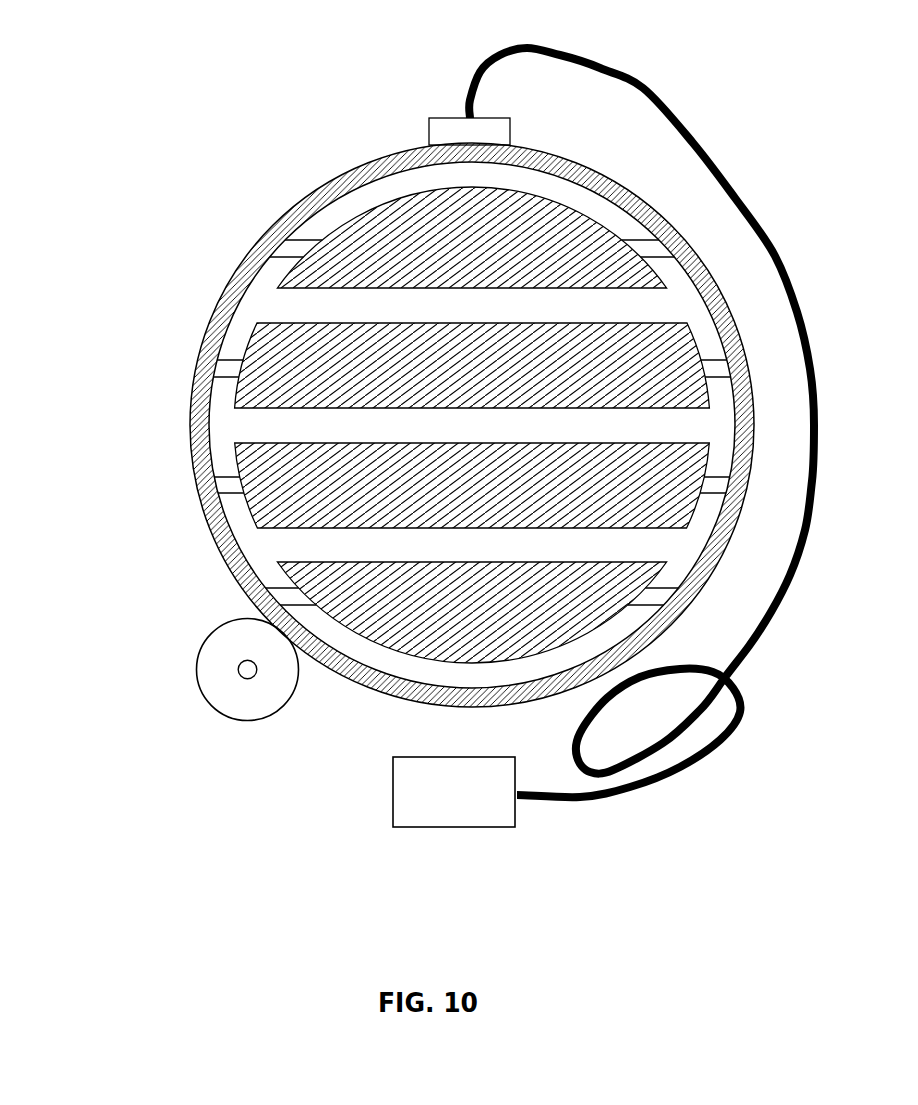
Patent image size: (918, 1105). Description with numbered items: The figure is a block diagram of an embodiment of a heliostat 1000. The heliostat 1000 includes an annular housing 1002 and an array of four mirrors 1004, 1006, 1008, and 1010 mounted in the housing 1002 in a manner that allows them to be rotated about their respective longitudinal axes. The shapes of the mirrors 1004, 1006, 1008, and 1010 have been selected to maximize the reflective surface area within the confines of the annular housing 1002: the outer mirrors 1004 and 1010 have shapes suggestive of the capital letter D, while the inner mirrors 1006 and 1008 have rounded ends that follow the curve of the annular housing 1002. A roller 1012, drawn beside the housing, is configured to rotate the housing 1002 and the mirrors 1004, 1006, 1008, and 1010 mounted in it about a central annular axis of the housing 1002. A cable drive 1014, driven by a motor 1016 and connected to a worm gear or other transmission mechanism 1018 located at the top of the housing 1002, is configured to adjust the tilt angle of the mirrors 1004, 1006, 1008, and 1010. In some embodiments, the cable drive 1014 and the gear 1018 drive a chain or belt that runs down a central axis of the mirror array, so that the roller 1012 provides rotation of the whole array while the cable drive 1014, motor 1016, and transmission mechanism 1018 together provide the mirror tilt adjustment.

The heliostat 1000 is at (148, 57).
The annular housing 1002 is at (265, 236).
The mirror 1004 is at (388, 232).
The mirror 1006 is at (287, 351).
The mirror 1008 is at (270, 471).
The mirror 1010 is at (386, 608).
The roller 1012 is at (195, 668).
The cable drive 1014 is at (659, 779).
The motor 1016 is at (447, 817).
The transmission mechanism 1018 is at (447, 123).